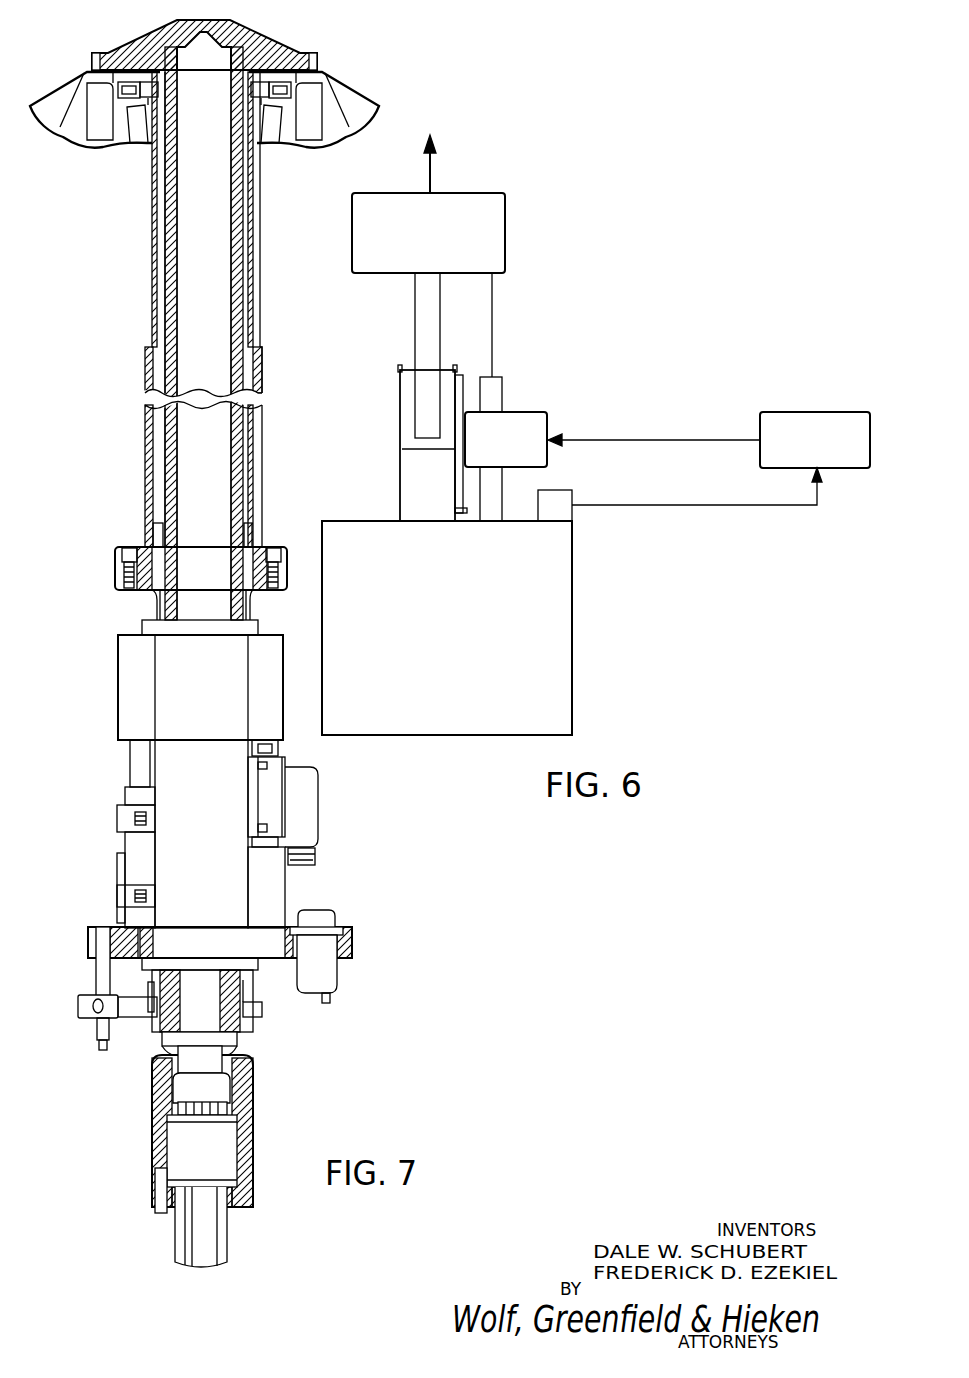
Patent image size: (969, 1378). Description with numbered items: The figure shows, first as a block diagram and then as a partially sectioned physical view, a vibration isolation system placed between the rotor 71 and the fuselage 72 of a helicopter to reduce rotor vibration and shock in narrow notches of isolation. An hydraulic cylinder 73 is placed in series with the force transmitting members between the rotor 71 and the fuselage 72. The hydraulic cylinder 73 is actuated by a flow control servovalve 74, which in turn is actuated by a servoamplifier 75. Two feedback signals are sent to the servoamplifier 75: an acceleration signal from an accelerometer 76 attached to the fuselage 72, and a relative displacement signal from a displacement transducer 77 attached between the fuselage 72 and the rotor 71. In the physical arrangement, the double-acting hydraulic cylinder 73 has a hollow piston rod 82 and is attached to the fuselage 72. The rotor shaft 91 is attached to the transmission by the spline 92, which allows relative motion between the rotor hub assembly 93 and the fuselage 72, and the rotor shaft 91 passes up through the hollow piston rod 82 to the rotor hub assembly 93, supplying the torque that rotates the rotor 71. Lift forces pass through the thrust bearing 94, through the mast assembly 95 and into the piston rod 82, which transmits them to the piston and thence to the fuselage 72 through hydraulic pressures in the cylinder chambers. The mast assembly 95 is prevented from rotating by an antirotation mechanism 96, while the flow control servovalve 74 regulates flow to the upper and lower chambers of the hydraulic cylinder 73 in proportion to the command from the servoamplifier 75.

In FIG. 6, the rotor 71 is at (500, 213).
In FIG. 7, the fuselage 72 is at (352, 950).
In FIG. 6, the fuselage 72 is at (572, 637).
In FIG. 7, the hydraulic cylinder 73 is at (117, 706).
In FIG. 6, the hydraulic cylinder 73 is at (400, 393).
In FIG. 7, the flow control servovalve 74 is at (321, 818).
In FIG. 6, the flow control servovalve 74 is at (548, 426).
In FIG. 6, the servoamplifier 75 is at (833, 470).
In FIG. 7, the accelerometer 76 is at (338, 976).
In FIG. 6, the accelerometer 76 is at (570, 513).
In FIG. 7, the displacement transducer 77 is at (125, 840).
In FIG. 6, the displacement transducer 77 is at (497, 376).
In FIG. 7, the piston rod 82 is at (153, 606).
In FIG. 7, the rotor shaft 91 is at (241, 493).
In FIG. 7, the spline 92 is at (238, 1150).
In FIG. 7, the rotor hub assembly 93 is at (272, 40).
In FIG. 7, the thrust bearing 94 is at (278, 133).
In FIG. 7, the mast assembly 95 is at (258, 323).
In FIG. 7, the antirotation mechanism 96 is at (92, 1020).